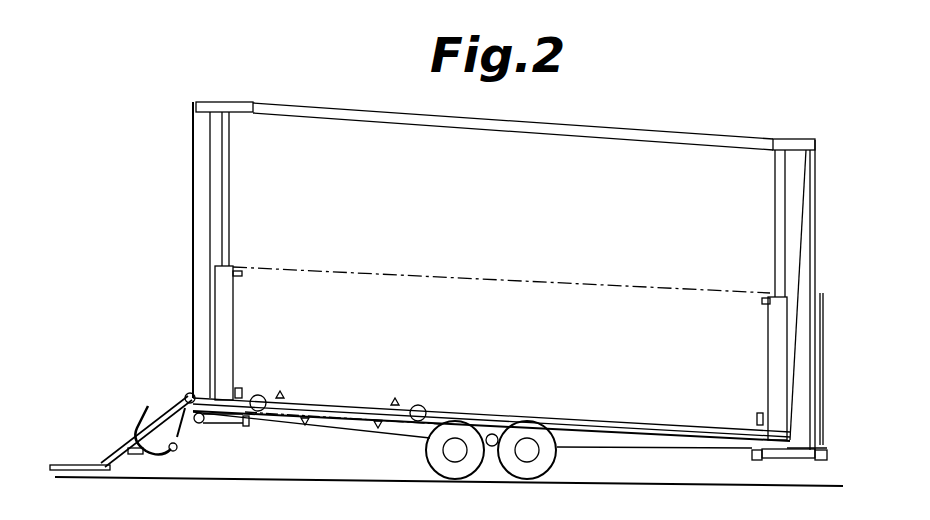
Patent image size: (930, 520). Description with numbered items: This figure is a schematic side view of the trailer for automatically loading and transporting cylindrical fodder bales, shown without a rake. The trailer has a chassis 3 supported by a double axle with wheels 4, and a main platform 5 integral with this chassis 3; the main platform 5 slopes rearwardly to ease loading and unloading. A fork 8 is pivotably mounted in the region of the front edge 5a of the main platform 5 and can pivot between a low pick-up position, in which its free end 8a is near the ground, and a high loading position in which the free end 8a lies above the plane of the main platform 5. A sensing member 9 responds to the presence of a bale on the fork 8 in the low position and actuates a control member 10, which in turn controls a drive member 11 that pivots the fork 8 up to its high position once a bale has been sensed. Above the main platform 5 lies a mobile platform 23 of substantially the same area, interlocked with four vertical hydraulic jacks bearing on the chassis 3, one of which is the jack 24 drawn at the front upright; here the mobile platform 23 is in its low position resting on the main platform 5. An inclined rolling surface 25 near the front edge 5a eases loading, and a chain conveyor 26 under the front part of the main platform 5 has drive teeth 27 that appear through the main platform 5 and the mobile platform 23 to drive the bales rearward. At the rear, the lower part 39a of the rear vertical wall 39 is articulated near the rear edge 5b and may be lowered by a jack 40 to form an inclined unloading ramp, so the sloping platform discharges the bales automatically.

The chassis 3 is at (253, 108).
The wheels 4 is at (428, 456).
The main platform 5 is at (617, 437).
The front edge 5a is at (213, 412).
The rear edge 5b is at (757, 428).
The fork 8 is at (95, 460).
The free end 8a is at (56, 465).
The sensing member 9 is at (140, 426).
The control member 10 is at (142, 455).
The drive member 11 is at (218, 423).
The mobile platform 23 is at (503, 415).
The front hydraulic cylinder 24 is at (223, 310).
The inclined rolling surface 25 is at (192, 392).
The chain conveyor 26 is at (371, 400).
The drive teeth 27 is at (336, 400).
The rear vertical wall 39 is at (818, 240).
The lower part 39a is at (822, 355).
The jack 40 is at (787, 458).